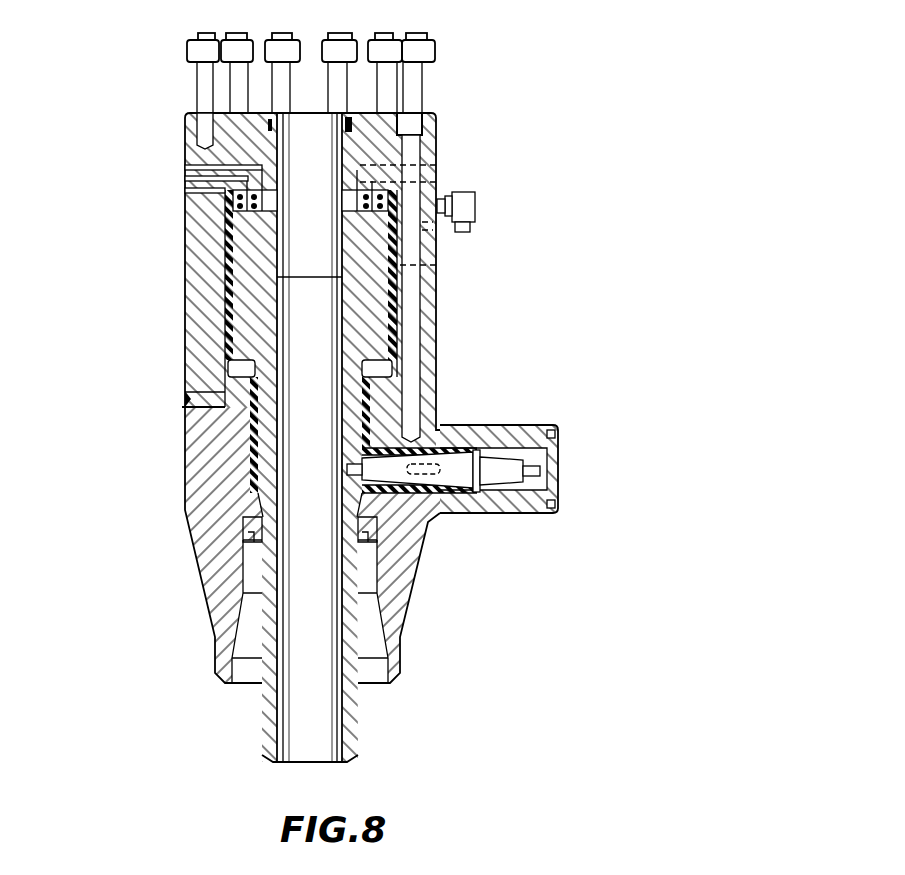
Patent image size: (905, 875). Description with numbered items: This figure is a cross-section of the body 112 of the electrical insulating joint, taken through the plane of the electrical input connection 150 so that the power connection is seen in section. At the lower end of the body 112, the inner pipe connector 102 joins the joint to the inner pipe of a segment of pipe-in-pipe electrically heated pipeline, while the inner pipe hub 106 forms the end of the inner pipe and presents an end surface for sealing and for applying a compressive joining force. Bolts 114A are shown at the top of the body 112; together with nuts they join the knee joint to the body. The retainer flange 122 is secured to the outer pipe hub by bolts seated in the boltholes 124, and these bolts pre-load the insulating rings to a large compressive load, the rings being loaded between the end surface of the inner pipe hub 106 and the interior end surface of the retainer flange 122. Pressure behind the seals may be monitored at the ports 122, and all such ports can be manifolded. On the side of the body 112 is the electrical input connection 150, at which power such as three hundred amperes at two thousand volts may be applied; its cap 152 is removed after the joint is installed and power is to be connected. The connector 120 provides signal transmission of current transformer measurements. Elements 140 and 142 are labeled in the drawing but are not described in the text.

The inner pipe connector 102 is at (403, 557).
The inner pipe hub 106 is at (255, 300).
The body 112 is at (146, 447).
The bolts 114A is at (420, 76).
The connector 120 is at (468, 207).
The retainer flange 122 is at (440, 165).
The boltholes 124 is at (410, 300).
The spacer rings 140 is at (225, 191).
The passage 142 is at (437, 265).
The electrical input connection 150 is at (580, 446).
The cap 152 is at (553, 487).